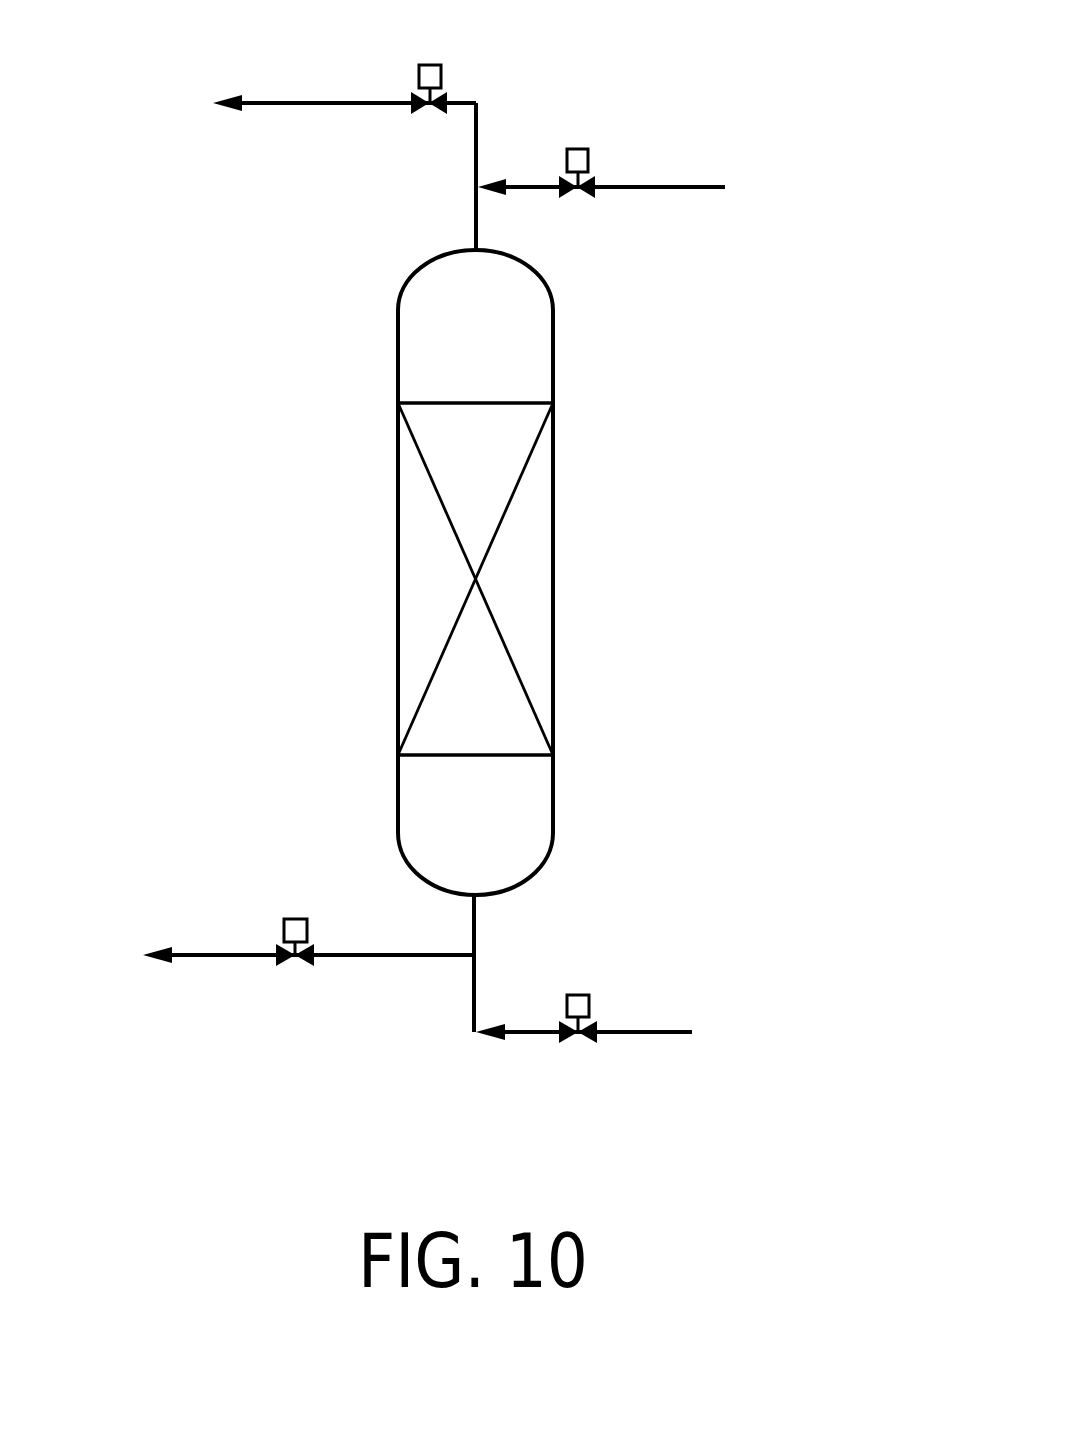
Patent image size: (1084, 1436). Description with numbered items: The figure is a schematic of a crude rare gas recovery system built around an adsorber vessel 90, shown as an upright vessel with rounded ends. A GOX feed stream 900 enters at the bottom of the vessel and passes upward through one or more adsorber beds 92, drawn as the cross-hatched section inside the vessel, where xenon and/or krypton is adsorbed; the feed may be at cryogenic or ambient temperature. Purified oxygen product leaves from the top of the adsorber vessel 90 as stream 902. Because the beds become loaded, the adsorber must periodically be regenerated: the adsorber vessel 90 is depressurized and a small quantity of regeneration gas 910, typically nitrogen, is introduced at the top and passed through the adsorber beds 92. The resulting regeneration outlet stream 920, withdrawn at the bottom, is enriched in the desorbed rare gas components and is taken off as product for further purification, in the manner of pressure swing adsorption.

The adsorber vessel 90 is at (398, 372).
The adsorber beds 92 is at (525, 575).
The GOX feed stream 900 is at (625, 1031).
The purified oxygen product stream 902 is at (298, 101).
The regeneration gas 910 is at (643, 185).
The regeneration outlet stream 920 is at (231, 952).